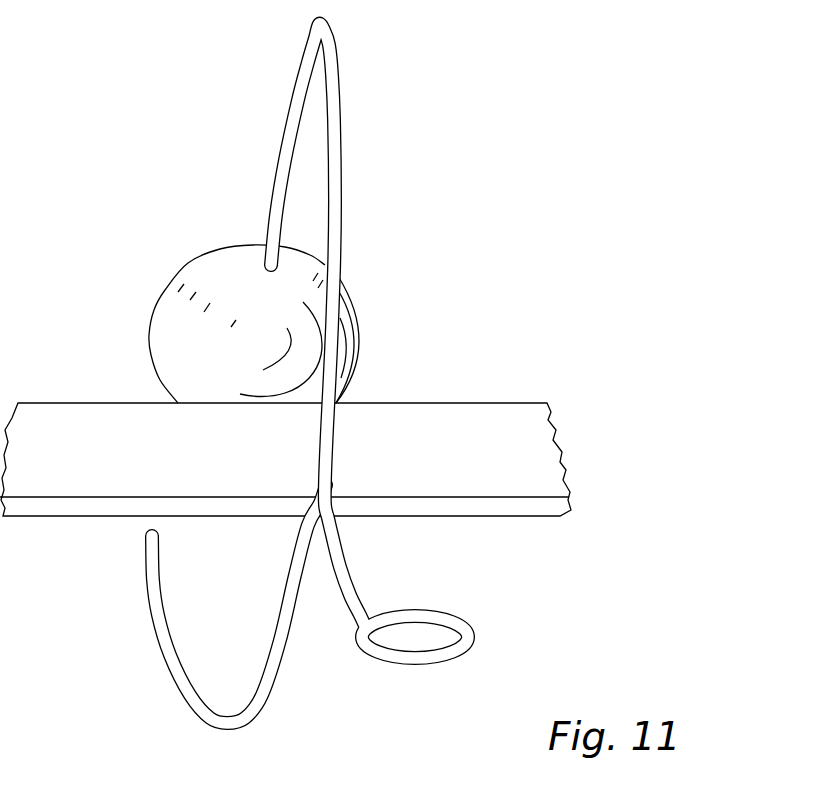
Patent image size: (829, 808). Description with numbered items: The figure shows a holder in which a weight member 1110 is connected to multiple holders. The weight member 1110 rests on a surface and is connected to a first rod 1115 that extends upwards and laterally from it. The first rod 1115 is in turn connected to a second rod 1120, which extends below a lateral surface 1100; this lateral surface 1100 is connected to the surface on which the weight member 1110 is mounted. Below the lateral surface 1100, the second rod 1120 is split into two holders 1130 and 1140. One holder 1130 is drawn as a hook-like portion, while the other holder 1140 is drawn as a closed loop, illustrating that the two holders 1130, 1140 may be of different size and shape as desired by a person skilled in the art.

The lateral surface 1100 is at (540, 468).
The weight member 1110 is at (365, 322).
The first rod 1115 is at (268, 218).
The second rod 1120 is at (309, 389).
The holder 1130 is at (205, 720).
The holder 1140 is at (443, 667).